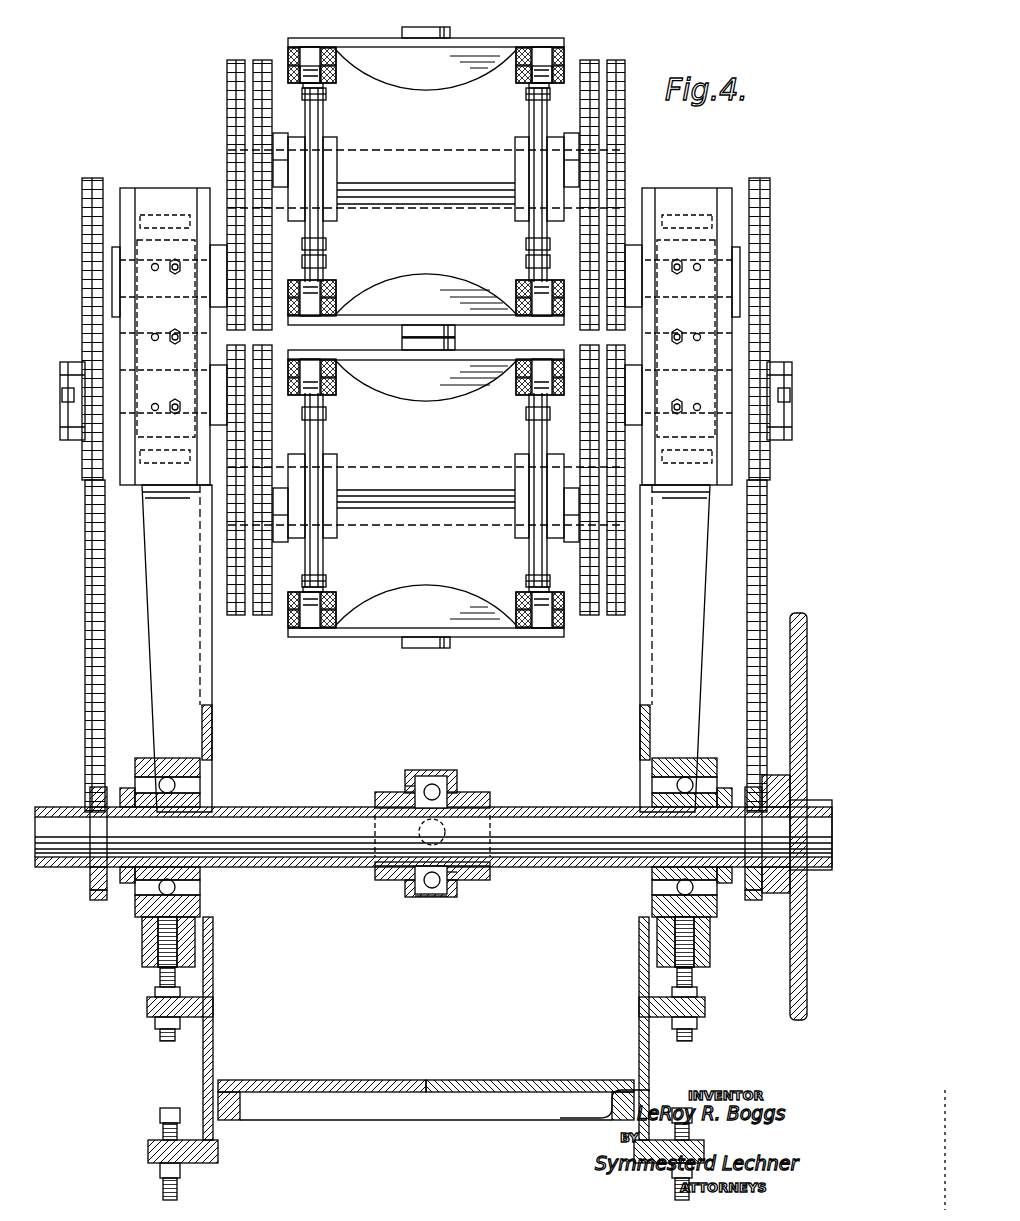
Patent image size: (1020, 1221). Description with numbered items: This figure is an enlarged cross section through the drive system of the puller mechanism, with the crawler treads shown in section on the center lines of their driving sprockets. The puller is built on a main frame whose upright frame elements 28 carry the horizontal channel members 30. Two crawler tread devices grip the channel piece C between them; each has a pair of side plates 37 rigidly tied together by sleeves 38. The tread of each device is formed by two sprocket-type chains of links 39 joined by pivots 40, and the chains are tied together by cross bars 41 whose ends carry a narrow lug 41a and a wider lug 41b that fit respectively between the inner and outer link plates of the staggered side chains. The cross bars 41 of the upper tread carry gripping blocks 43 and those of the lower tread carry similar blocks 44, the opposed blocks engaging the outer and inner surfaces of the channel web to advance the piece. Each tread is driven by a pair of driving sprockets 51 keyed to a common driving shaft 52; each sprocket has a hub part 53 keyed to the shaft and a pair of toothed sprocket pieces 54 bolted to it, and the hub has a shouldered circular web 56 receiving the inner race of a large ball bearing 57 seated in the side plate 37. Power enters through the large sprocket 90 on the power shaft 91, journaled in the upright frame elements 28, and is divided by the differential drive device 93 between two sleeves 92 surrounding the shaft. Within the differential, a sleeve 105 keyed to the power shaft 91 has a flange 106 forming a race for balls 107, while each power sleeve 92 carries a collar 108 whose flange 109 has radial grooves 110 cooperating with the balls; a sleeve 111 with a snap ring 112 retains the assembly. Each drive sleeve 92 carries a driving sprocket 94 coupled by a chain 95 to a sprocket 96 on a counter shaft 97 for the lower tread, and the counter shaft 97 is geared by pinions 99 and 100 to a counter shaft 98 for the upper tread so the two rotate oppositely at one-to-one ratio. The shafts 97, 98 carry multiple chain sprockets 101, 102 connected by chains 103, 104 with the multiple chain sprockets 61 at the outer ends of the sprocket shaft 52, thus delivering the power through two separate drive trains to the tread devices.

The upright frame element 28 is at (214, 712).
The horizontal channel member 30 is at (135, 240).
The side plate 37 is at (312, 130).
The sleeve 38 is at (405, 213).
The link 39 is at (290, 56).
The pivot 40 is at (322, 70).
The cross bar 41 is at (503, 40).
The narrow lug 41a is at (540, 86).
The wide lug 41b is at (318, 86).
The gripping block 43 is at (450, 33).
The gripping block 44 is at (405, 343).
The driving sprocket 51 is at (325, 108).
The driving shaft 52 is at (457, 150).
The hub part 53 is at (336, 236).
The sprocket piece 54 is at (303, 95).
The shouldered circular web 56 is at (330, 247).
The ball bearing 57 is at (330, 263).
The multiple chain sprocket 61 is at (246, 92).
The large sprocket 90 is at (795, 937).
The power shaft 91 is at (577, 866).
The sleeve 92 is at (283, 807).
The differential drive device 93 is at (466, 776).
The driving sprocket 94 is at (95, 902).
The chain 95 is at (86, 643).
The sprocket 96 is at (85, 250).
The counter shaft 97 is at (82, 455).
The counter shaft 98 is at (213, 240).
The pinion 99 is at (142, 487).
The pinion 100 is at (163, 215).
The multiple chain sprocket 101 is at (270, 340).
The multiple chain sprocket 102 is at (255, 326).
The chain 103 is at (232, 513).
The chain 104 is at (232, 119).
The sleeve 105 is at (452, 880).
The flange 106 is at (433, 789).
The ball 107 is at (430, 897).
The collar 108 is at (410, 870).
The flange 109 is at (410, 884).
The radial groove 110 is at (418, 898).
The sleeve 111 is at (418, 770).
The snap ring 112 is at (405, 786).
The channel piece C is at (457, 340).